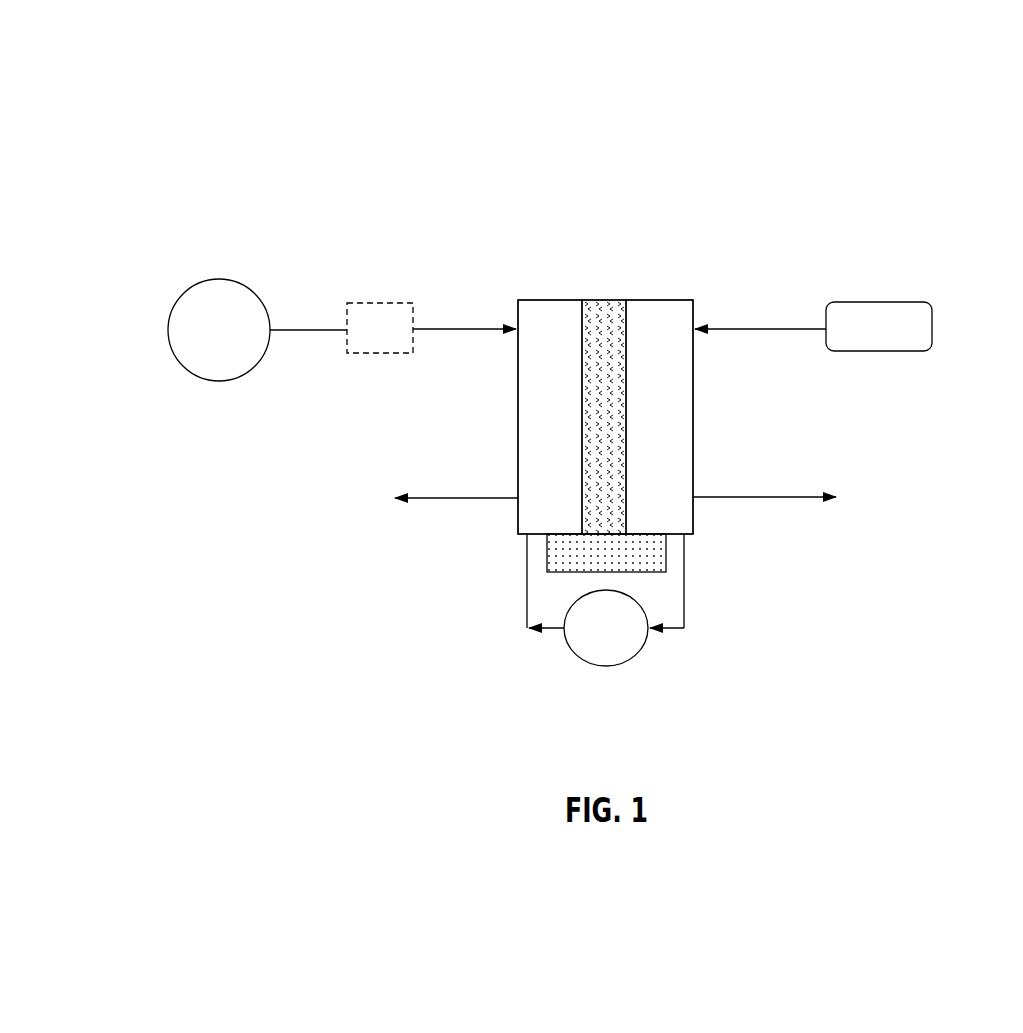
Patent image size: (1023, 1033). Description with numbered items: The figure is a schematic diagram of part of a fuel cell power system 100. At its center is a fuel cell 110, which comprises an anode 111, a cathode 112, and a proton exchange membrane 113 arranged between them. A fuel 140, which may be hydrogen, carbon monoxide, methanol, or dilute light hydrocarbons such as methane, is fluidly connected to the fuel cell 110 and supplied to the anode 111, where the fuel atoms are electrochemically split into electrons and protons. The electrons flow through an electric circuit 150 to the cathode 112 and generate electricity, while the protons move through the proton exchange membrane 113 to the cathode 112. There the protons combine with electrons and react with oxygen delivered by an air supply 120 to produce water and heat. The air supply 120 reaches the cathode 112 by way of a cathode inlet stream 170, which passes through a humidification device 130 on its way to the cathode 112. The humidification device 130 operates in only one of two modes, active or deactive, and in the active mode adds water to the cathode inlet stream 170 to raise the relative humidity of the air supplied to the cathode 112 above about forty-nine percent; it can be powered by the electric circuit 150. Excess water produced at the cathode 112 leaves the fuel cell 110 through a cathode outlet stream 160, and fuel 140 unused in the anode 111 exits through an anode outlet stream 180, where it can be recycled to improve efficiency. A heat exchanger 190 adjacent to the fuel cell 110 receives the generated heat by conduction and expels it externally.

The power system 100 is at (188, 137).
The fuel cell 110 is at (604, 228).
The anode 111 is at (676, 296).
The cathode 112 is at (552, 296).
The proton exchange membrane 113 is at (604, 296).
The air supply 120 is at (222, 275).
The humidification device 130 is at (379, 297).
The fuel 140 is at (874, 296).
The electric circuit 150 is at (672, 655).
The cathode outlet stream 160 is at (433, 504).
The cathode inlet stream 170 is at (470, 338).
The anode outlet stream 180 is at (805, 493).
The heat exchanger 190 is at (672, 560).